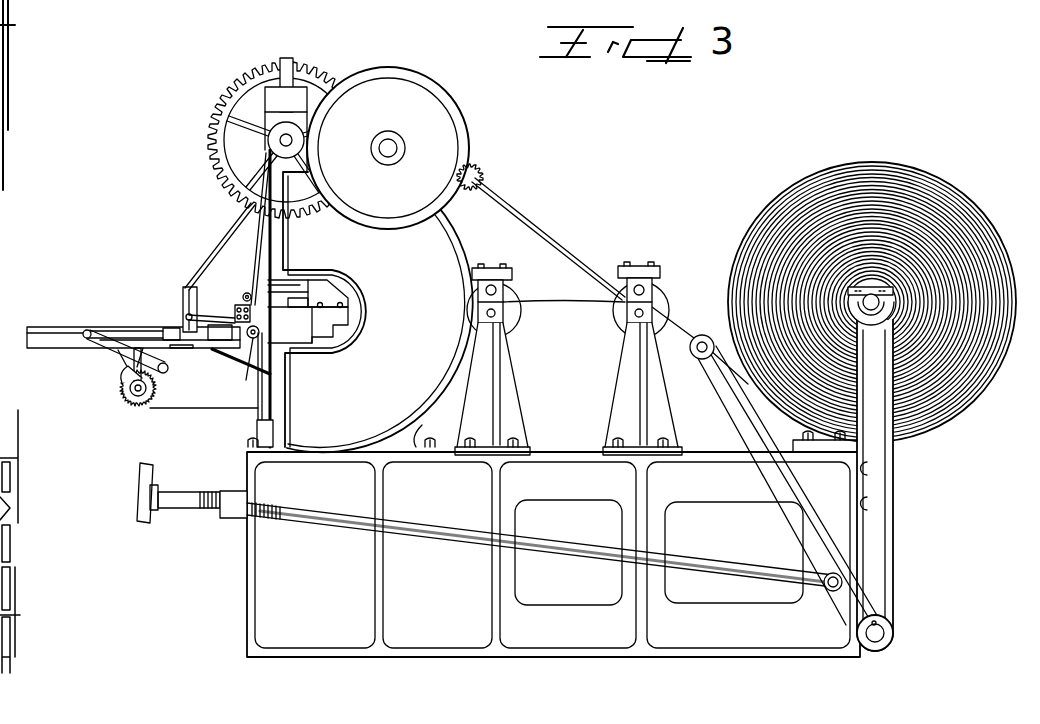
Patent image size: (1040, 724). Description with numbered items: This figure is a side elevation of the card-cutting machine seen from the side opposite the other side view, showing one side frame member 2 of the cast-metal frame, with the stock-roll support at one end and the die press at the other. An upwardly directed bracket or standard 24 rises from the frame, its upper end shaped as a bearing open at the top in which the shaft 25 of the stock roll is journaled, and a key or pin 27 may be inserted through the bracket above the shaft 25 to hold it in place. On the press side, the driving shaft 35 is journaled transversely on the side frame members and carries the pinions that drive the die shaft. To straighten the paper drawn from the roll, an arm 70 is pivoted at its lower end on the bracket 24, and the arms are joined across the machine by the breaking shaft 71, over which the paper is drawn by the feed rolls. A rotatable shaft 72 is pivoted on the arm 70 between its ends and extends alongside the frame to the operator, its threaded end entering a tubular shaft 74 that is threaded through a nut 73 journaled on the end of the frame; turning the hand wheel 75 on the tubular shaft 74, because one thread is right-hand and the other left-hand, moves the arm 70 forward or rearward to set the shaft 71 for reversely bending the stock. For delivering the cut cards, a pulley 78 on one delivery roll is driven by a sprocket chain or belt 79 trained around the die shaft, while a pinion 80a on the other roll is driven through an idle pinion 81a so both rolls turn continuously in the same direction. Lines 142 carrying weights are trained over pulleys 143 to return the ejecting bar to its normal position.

The side frame member 2 is at (267, 610).
The bracket or standard 24 is at (885, 495).
The shaft 25 is at (874, 302).
The key or pin 27 is at (873, 284).
The driving shaft 35 is at (392, 144).
The arm 70 is at (870, 602).
The shaft 71 is at (702, 335).
The rotatable shaft 72 is at (593, 548).
The nut 73 is at (228, 492).
The tubular shaft 74 is at (199, 492).
The hand wheel 75 is at (147, 463).
The pulley 78 is at (250, 335).
The sprocket chain or belt 79 is at (256, 240).
The pinion 80a is at (240, 312).
The idle pinion 81a is at (247, 294).
The lines 142 is at (258, 408).
The pulleys 143 is at (248, 368).